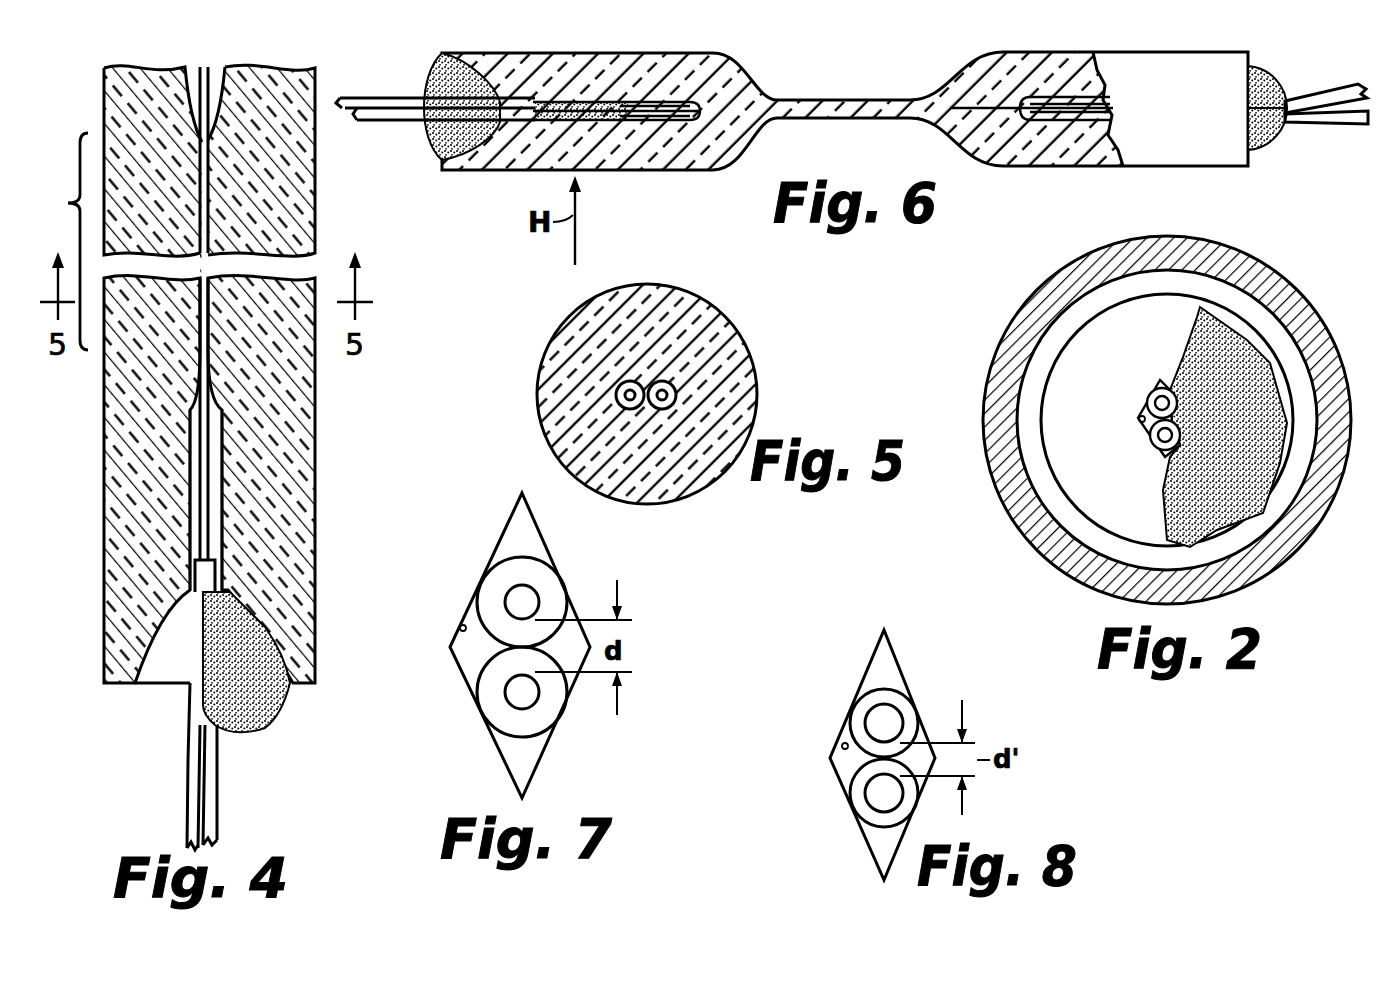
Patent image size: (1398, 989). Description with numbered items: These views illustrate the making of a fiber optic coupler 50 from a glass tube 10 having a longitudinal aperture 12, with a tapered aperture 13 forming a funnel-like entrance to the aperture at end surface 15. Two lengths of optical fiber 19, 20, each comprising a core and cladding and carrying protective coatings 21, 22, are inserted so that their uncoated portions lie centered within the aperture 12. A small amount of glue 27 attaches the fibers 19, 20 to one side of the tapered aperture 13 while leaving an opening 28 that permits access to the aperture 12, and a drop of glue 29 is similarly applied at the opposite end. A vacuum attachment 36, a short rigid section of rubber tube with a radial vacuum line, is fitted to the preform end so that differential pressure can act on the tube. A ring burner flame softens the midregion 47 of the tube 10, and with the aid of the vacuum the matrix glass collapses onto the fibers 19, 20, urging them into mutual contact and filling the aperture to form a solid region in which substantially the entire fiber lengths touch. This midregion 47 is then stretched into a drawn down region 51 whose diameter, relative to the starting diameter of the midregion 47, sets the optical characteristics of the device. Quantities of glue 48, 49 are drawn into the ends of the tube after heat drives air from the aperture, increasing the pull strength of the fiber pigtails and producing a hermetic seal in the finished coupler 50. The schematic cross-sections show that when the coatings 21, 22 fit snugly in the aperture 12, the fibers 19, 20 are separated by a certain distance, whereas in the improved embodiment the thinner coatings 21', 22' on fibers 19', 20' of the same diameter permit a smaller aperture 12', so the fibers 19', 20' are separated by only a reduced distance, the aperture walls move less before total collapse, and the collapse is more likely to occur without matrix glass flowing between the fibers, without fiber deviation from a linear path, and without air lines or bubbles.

In FIG. 5, the tube 10 is at (740, 311).
In FIG. 4, the longitudinal aperture 12 is at (177, 500).
In FIG. 6, the longitudinal aperture 12 is at (658, 57).
In FIG. 2, the longitudinal aperture 12 is at (1115, 416).
In FIG. 7, the longitudinal aperture 12 is at (434, 624).
In FIG. 8, the aperture 12' is at (811, 744).
In FIG. 4, the tapered aperture 13 is at (158, 618).
In FIG. 2, the tapered aperture 13 is at (1153, 345).
In FIG. 4, the end surface 15 is at (115, 688).
In FIG. 2, the end surface 15 is at (1283, 347).
In FIG. 4, the optical fiber 19 is at (236, 329).
In FIG. 6, the optical fiber 19 is at (823, 108).
In FIG. 5, the optical fiber 19 is at (669, 370).
In FIG. 2, the optical fiber 19 is at (1127, 390).
In FIG. 7, the optical fiber 19 is at (482, 591).
In FIG. 8, the optical fiber 19' is at (846, 720).
In FIG. 5, the optical fiber 20 is at (623, 370).
In FIG. 2, the optical fiber 20 is at (1128, 445).
In FIG. 7, the optical fiber 20 is at (475, 709).
In FIG. 8, the optical fiber 20' is at (850, 814).
In FIG. 4, the protective coating 21 is at (166, 766).
In FIG. 6, the protective coating 21 is at (852, 110).
In FIG. 2, the protective coating 21 is at (1139, 381).
In FIG. 7, the protective coating 21 is at (501, 587).
In FIG. 8, the coating 21' is at (856, 711).
In FIG. 4, the protective coating 22 is at (239, 785).
In FIG. 6, the protective coating 22 is at (857, 103).
In FIG. 2, the protective coating 22 is at (1140, 454).
In FIG. 7, the protective coating 22 is at (488, 692).
In FIG. 8, the coating 22' is at (851, 793).
In FIG. 4, the glue 27 is at (262, 705).
In FIG. 6, the glue 27 is at (1270, 142).
In FIG. 2, the glue 27 is at (1180, 505).
In FIG. 4, the opening 28 is at (182, 602).
In FIG. 6, the drop of glue 29 is at (430, 138).
In FIG. 2, the vacuum attachment 36 is at (1284, 276).
In FIG. 4, the midregion 47 is at (57, 241).
In FIG. 6, the glue 48 is at (433, 85).
In FIG. 6, the glue 49 is at (1110, 116).
In FIG. 6, the fiber optic coupler 50 is at (655, 180).
In FIG. 6, the drawn down region 51 is at (885, 100).